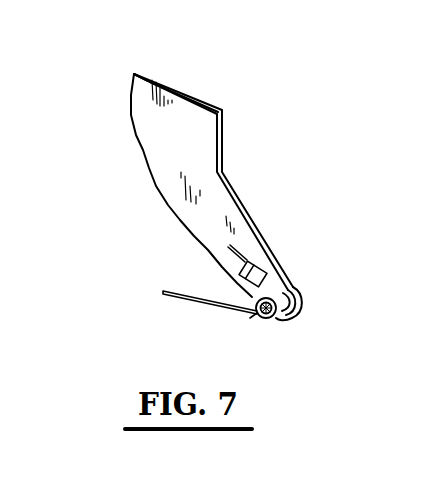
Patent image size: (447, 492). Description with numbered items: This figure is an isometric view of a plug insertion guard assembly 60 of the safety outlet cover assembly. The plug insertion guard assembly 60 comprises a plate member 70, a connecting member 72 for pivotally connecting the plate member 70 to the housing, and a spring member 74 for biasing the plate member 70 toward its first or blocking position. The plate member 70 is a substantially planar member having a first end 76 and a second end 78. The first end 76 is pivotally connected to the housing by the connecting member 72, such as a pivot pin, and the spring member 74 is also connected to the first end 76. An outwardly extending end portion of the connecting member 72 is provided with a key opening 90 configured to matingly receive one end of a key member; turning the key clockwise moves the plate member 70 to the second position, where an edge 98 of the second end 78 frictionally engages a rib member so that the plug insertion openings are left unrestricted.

The plug insertion guard assembly 60 is at (242, 100).
The plate member 70 is at (153, 158).
The connecting member 72 is at (266, 321).
The spring member 74 is at (180, 303).
The first end 76 is at (230, 265).
The second end 78 is at (148, 75).
The key opening 90 is at (260, 315).
The edge 98 is at (192, 97).